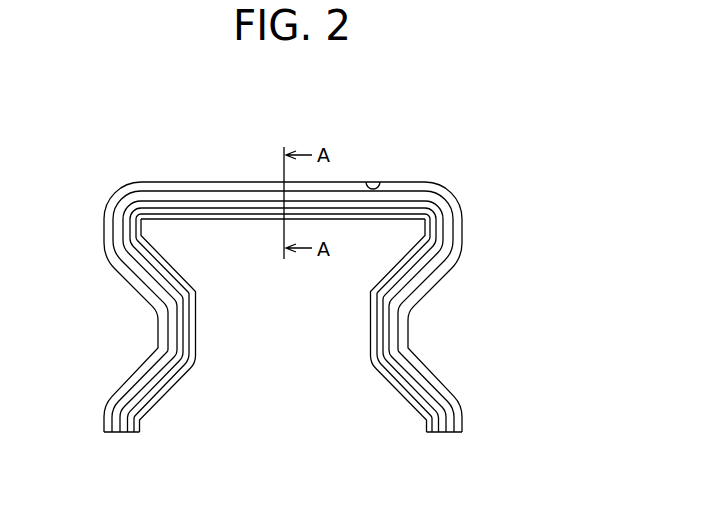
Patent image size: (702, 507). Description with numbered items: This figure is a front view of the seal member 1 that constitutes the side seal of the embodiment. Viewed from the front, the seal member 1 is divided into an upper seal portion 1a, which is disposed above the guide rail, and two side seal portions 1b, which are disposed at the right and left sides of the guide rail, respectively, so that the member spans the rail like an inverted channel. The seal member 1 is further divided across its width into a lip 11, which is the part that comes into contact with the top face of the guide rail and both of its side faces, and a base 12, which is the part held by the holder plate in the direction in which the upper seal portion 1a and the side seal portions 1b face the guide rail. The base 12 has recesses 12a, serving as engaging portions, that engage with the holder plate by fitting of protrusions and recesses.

The seal member 1 is at (125, 164).
The upper seal portion 1a is at (202, 188).
The side seal portions 1b is at (155, 298).
The lip 11 is at (237, 223).
The base 12 is at (243, 182).
The recesses 12a is at (380, 186).